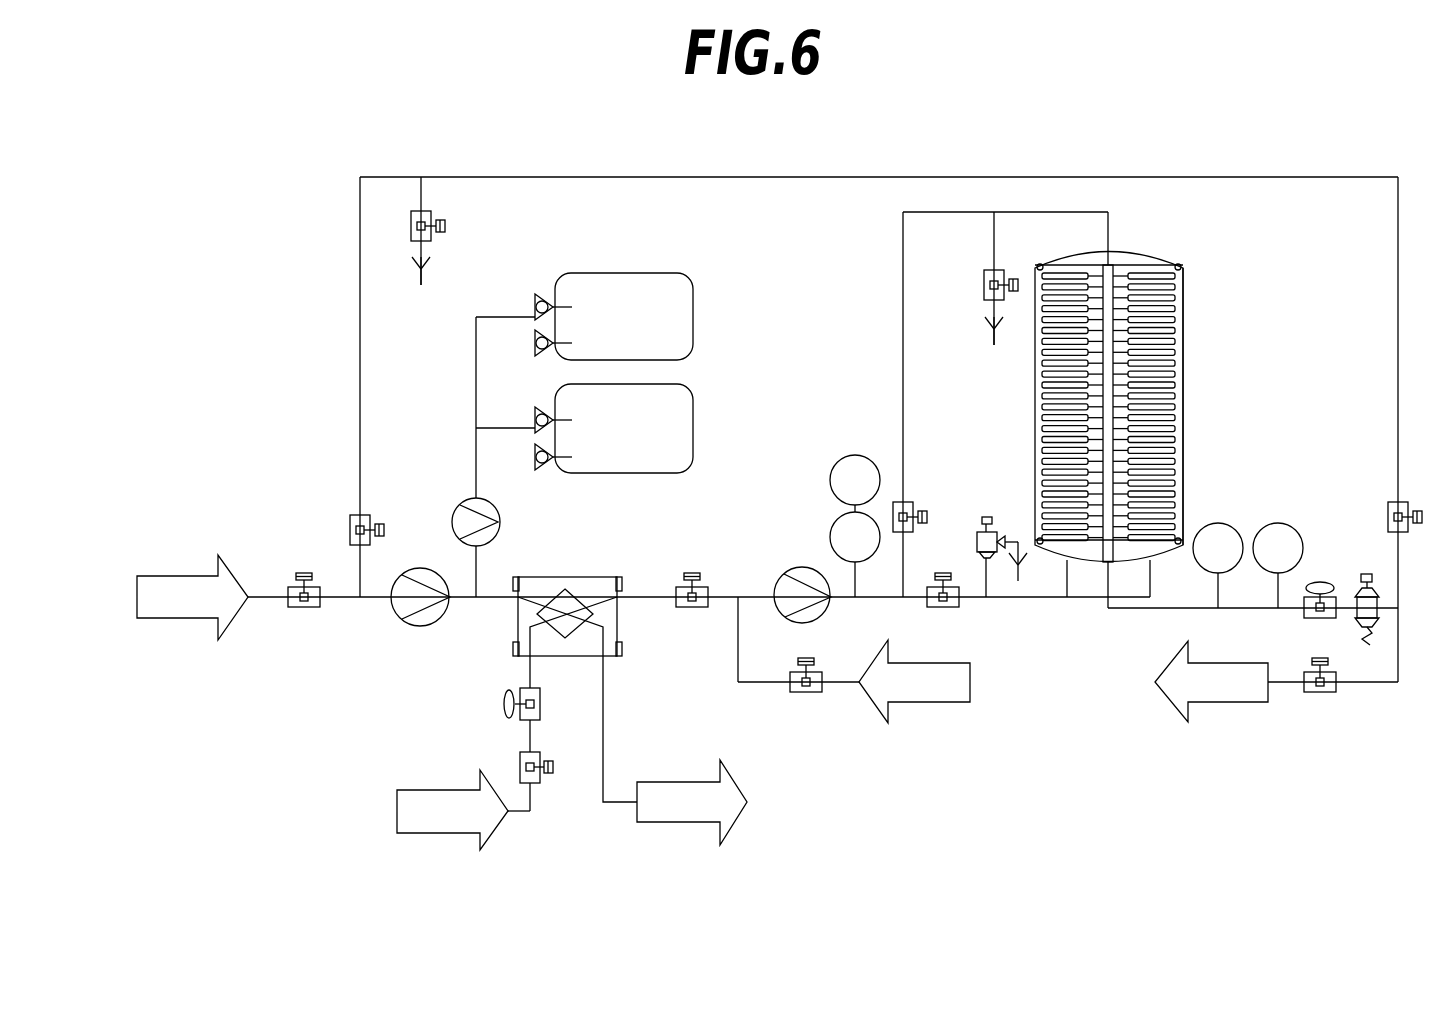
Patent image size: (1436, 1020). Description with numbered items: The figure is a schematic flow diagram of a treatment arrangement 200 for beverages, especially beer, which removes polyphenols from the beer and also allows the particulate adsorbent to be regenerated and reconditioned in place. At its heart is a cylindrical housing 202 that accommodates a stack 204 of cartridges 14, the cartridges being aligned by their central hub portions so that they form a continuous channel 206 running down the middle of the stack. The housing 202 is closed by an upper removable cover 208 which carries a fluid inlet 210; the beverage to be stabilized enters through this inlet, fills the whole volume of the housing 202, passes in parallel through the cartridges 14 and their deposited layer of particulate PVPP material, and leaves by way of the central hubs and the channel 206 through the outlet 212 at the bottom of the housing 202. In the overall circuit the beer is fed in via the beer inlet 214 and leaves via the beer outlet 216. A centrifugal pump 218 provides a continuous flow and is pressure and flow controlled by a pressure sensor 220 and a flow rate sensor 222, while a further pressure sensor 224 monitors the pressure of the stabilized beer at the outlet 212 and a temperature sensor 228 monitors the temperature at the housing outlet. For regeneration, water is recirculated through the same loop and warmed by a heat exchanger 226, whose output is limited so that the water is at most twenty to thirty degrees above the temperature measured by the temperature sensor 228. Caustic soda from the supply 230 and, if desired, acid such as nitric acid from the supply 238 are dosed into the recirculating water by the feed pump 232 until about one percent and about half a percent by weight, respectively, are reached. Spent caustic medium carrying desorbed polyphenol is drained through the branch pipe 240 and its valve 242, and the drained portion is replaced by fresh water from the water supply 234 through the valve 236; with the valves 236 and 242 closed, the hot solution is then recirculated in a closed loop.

The treatment arrangement 200 is at (313, 193).
The branch pipe 240 is at (423, 182).
The valve 242 is at (431, 240).
The acid supply 238 is at (680, 292).
The caustic soda supply 230 is at (680, 422).
The feed pump 232 is at (468, 507).
The water supply 234 is at (177, 587).
The valve 236 is at (310, 604).
The heat exchanger 226 is at (580, 580).
The centrifugal pump 218 is at (784, 572).
The flow rate sensor 222 is at (833, 535).
The pressure sensor 220 is at (853, 460).
The upper removable cover 208 is at (1065, 258).
The stack of cartridges 204 is at (1103, 262).
The fluid inlet 210 is at (1112, 249).
The cartridge 14 is at (1168, 318).
The cylindrical housing 202 is at (1185, 380).
The continuous channel 206 is at (1100, 560).
The outlet 212 is at (1114, 570).
The temperature sensor 228 is at (1218, 532).
The pressure sensor 224 is at (1280, 532).
The beer inlet 214 is at (938, 702).
The beer outlet 216 is at (1236, 692).